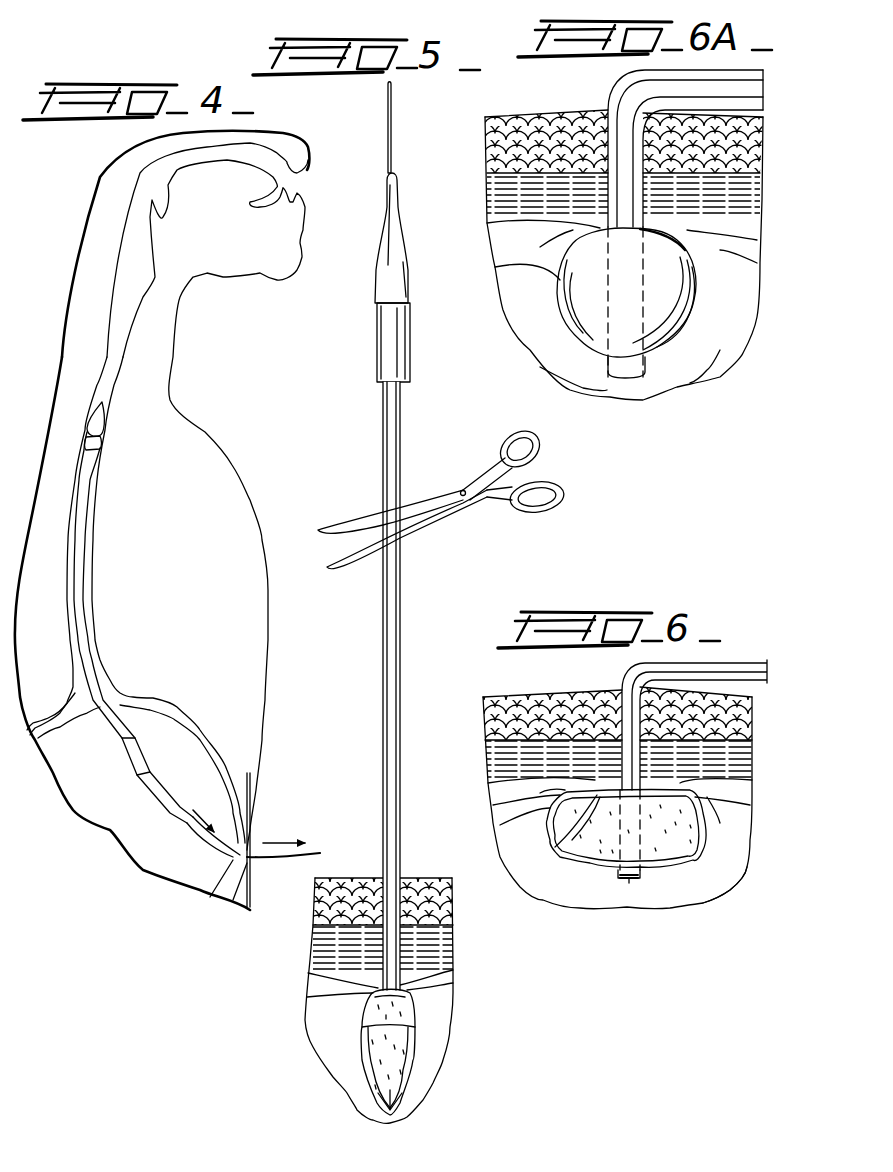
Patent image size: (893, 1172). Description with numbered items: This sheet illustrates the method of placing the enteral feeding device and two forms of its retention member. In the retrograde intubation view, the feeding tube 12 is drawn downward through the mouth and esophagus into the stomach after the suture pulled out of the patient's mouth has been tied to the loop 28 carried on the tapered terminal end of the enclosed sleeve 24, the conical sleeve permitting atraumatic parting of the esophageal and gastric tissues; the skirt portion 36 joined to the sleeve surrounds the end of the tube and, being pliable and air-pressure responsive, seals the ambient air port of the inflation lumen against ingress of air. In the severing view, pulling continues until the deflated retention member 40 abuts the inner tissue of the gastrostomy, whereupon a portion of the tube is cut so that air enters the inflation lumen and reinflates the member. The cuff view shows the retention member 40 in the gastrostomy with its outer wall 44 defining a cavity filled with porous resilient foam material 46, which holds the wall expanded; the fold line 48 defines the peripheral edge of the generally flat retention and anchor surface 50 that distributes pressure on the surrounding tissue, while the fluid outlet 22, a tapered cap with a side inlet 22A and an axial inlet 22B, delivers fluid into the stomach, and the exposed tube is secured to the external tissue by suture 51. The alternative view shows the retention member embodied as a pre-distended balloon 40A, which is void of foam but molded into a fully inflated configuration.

In FIG. 4, the feeding tube 12 is at (78, 545).
In FIG. 6A, the fluid outlet 22 is at (630, 380).
In FIG. 6, the fluid outlet 22 is at (622, 880).
In FIG. 6, the side inlet 22A is at (620, 875).
In FIG. 6, the axial inlet 22B is at (629, 882).
In FIG. 4, the enclosed sleeve 24 is at (153, 783).
In FIG. 4, the loop 28 is at (187, 823).
In FIG. 4, the skirt portion 36 is at (133, 757).
In FIG. 4, the retention member 40 is at (96, 424).
In FIG. 6, the retention member 40 is at (665, 864).
In FIG. 6A, the pre-distended balloon 40A is at (690, 318).
In FIG. 6, the outer wall 44 is at (712, 870).
In FIG. 6, the porous resilient foam material 46 is at (705, 828).
In FIG. 5, the fold line 48 is at (415, 1025).
In FIG. 6, the fold line 48 is at (578, 849).
In FIG. 6, the retention and anchor surface 50 is at (590, 797).
In FIG. 6A, the suture 51 is at (685, 148).
In FIG. 6, the suture 51 is at (688, 660).